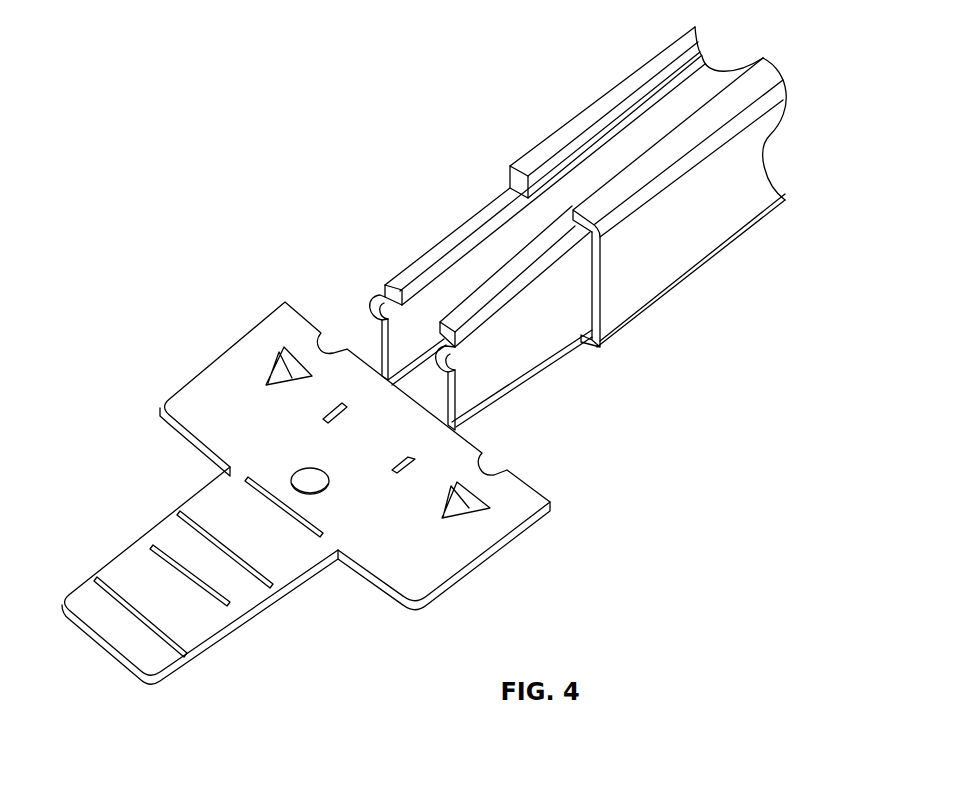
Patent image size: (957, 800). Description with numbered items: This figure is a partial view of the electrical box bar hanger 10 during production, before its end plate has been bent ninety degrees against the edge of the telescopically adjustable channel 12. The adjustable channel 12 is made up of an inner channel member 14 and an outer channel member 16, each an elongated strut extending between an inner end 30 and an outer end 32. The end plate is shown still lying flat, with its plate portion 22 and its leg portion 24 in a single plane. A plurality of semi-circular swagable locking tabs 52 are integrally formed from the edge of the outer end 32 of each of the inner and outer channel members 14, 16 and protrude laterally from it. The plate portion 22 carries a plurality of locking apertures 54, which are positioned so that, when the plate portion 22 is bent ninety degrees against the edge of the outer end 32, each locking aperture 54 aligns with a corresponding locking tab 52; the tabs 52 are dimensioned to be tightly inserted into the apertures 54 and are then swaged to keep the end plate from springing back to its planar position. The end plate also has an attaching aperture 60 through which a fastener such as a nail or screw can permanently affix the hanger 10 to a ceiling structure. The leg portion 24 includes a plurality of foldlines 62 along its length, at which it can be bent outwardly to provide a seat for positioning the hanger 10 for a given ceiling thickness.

The electrical box bar hanger 10 is at (427, 198).
The telescopically adjustable channel 12 is at (526, 133).
The inner channel member 14 is at (548, 328).
The outer channel member 16 is at (679, 208).
The plate portion 22 is at (448, 555).
The leg portion 24 is at (213, 610).
The inner end 30 is at (593, 278).
The outer end 32 is at (378, 343).
The locking tabs 52 is at (370, 315).
The locking apertures 54 is at (324, 413).
The attaching aperture 60 is at (317, 490).
The foldlines 62 is at (176, 513).